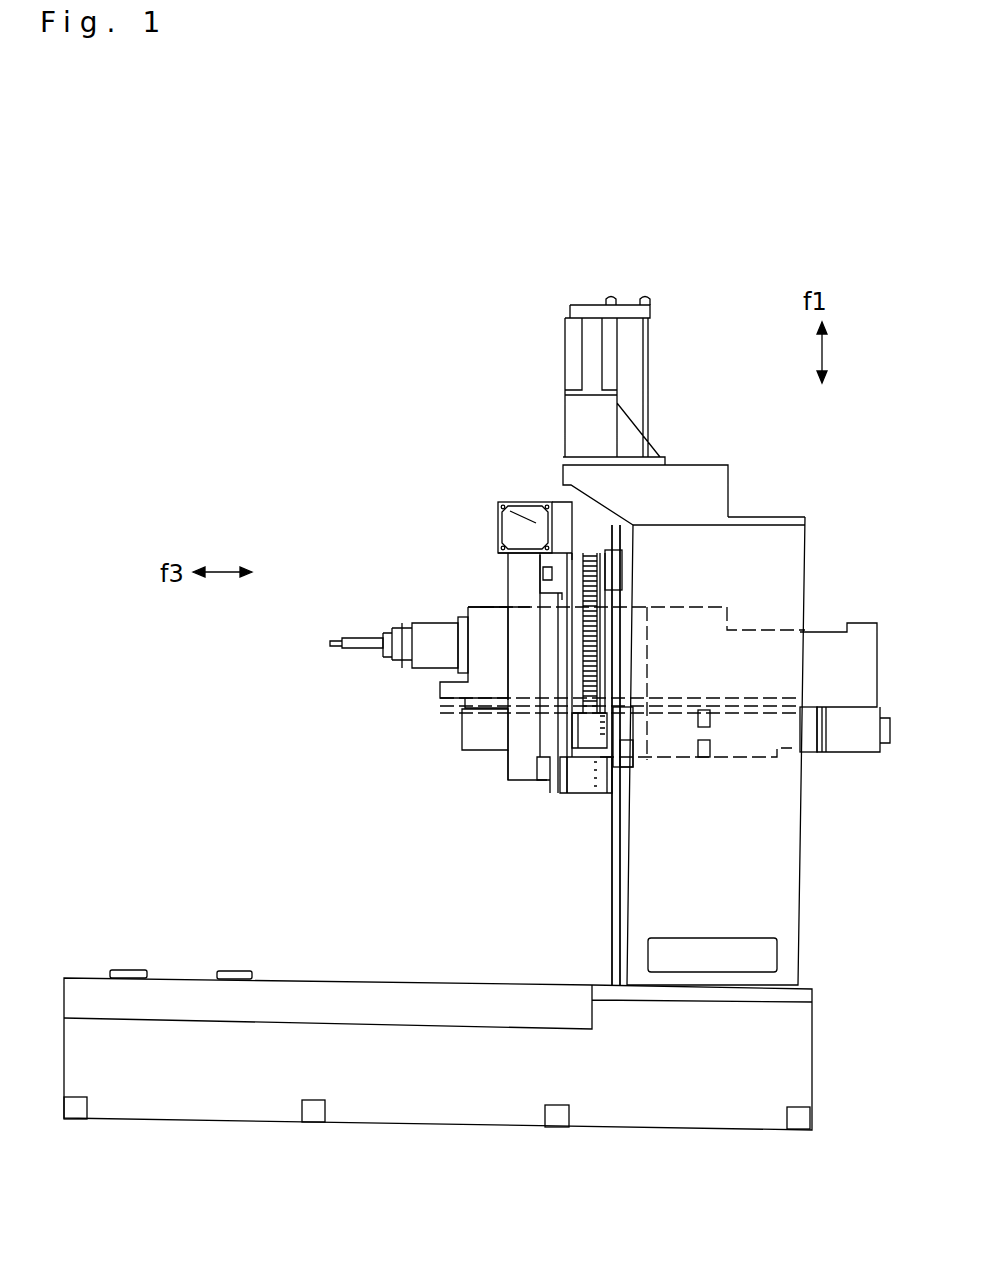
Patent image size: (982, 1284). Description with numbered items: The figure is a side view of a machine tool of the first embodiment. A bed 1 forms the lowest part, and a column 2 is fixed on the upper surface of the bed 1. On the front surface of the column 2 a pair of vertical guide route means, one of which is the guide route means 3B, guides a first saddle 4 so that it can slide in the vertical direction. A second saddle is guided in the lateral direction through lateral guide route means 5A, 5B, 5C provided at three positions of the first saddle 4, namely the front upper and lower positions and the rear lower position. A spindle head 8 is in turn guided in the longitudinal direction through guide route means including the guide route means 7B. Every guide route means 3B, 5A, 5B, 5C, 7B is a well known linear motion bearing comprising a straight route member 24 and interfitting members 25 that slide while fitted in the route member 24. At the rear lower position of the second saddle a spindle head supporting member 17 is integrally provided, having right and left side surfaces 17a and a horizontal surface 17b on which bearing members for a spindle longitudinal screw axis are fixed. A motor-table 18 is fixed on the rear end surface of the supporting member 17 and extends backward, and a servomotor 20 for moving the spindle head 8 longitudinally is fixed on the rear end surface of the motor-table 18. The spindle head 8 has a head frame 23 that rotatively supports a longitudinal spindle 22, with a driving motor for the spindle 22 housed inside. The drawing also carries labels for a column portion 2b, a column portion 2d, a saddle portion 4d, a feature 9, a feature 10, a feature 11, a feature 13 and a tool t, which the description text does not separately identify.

The bed 1 is at (408, 1126).
The column 2 is at (806, 835).
The column top plate 2b is at (774, 517).
The column upper projecting portion 2d is at (688, 470).
The vertical guide route means 3B is at (538, 850).
The first saddle 4 is at (568, 531).
The slide guide portion 4d is at (593, 521).
The lateral guide route means 5A is at (380, 525).
The lateral guide route means 5B is at (372, 790).
The lateral guide route means 5C is at (704, 815).
The guide route means 7B is at (336, 720).
The spindle head 8 is at (397, 615).
The mounting pad 9 is at (131, 968).
The feed motor 10 is at (565, 349).
The feed screw 11 is at (633, 626).
The feed mechanism 13 is at (565, 493).
The spindle head supporting member 17 is at (746, 640).
The side surface 17a is at (645, 693).
The horizontal surface 17b is at (458, 738).
The motor-table 18 is at (808, 742).
The servomotor 20 is at (851, 715).
The spindle 22 is at (388, 652).
The head frame 23 is at (478, 615).
The straight route member 24 is at (510, 547).
The interfitting members 25 is at (540, 560).
The tool t is at (342, 645).